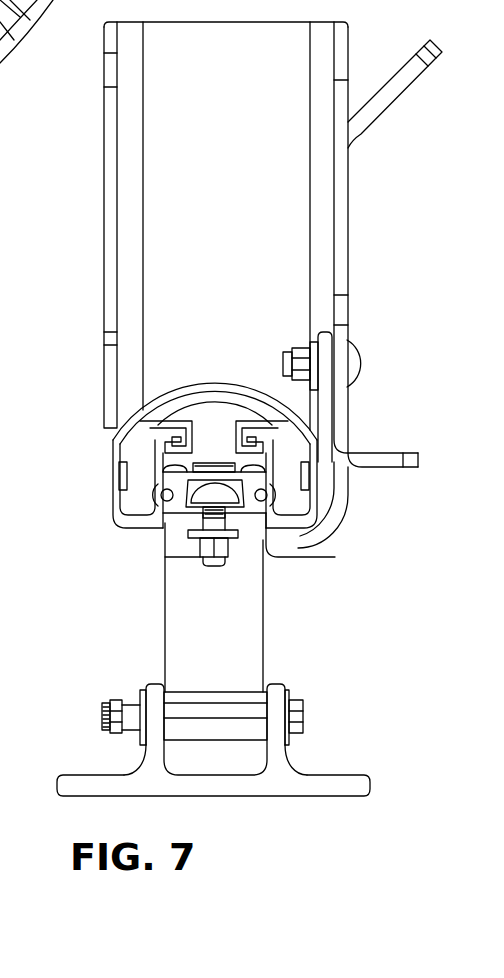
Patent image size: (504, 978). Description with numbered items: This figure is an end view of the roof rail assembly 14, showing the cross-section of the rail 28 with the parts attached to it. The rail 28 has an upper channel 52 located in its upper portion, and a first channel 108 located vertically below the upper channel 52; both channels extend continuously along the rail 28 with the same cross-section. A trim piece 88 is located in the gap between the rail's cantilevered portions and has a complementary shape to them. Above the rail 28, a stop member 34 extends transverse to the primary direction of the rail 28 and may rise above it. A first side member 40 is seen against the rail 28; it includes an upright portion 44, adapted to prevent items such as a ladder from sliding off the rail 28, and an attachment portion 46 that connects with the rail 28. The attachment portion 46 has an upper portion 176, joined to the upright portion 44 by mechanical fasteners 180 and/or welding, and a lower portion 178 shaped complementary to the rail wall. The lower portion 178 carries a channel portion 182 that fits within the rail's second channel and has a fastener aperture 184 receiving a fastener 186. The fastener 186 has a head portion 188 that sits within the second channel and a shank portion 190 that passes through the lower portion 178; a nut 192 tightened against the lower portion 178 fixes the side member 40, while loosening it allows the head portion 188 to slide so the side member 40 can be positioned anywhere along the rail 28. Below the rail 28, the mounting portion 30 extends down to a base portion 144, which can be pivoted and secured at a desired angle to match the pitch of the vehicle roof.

The roof rail assembly 14 is at (86, 180).
The upright portion 44 is at (128, 105).
The stop member 34 is at (402, 88).
The first side member 40 is at (348, 232).
The mechanical fastener 180 is at (356, 350).
The upper portion 176 is at (328, 403).
The trim piece 88 is at (166, 405).
The first channel 108 is at (199, 487).
The upper channel 52 is at (223, 440).
The rail 28 is at (120, 442).
The attachment portion 46 is at (352, 483).
The lower portion 178 is at (351, 517).
The head portion 188 is at (188, 496).
The shank portion 190 is at (265, 511).
The channel portion 182 is at (176, 530).
The fastener aperture 184 is at (228, 520).
The fastener 186 is at (213, 567).
The nut 192 is at (197, 555).
The mounting portion 30 is at (165, 660).
The base portion 144 is at (368, 786).